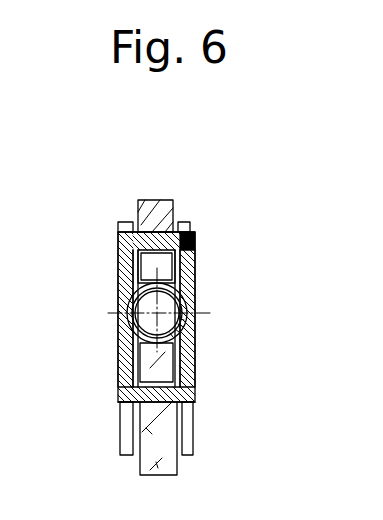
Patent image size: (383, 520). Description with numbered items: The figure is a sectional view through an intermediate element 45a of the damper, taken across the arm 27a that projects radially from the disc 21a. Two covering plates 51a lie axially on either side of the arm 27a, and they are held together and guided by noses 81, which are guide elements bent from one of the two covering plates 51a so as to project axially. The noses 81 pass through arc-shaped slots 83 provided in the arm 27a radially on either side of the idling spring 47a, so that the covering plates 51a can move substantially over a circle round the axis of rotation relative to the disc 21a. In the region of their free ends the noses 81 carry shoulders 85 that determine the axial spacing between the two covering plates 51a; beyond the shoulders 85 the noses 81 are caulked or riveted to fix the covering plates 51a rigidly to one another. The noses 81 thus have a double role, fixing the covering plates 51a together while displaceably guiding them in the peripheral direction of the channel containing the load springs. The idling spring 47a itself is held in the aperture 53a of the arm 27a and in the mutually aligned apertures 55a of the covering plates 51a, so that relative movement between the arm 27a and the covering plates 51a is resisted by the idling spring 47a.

The intermediate element 45a is at (117, 207).
The noses 81 is at (153, 200).
The arm 27a is at (163, 200).
The arc-shaped slots 83 is at (172, 216).
The shoulders 85 is at (195, 240).
The covering plates 51a is at (119, 250).
The aperture 53a is at (125, 288).
The idling spring 47a is at (190, 304).
The apertures 55a is at (121, 337).
The disc 21a is at (160, 475).